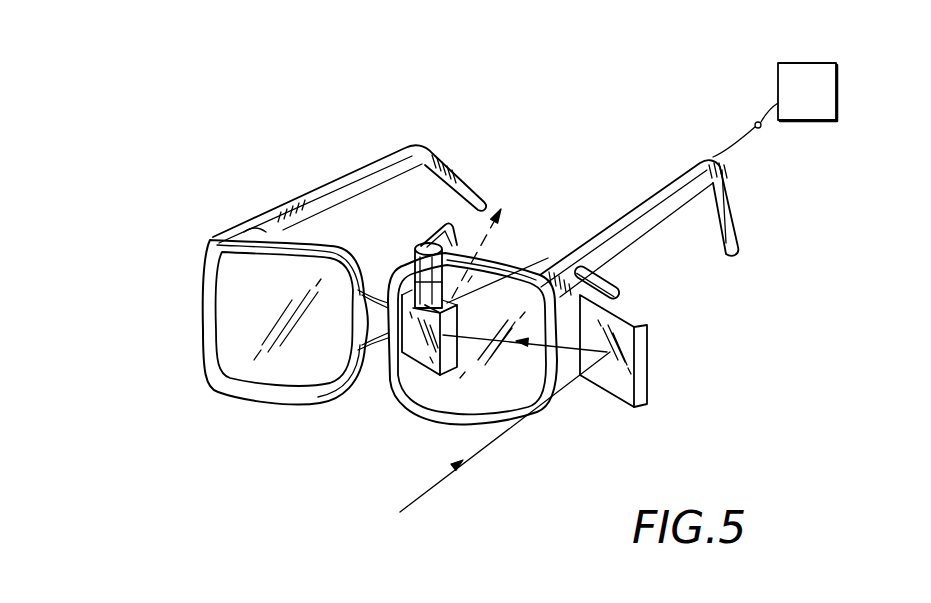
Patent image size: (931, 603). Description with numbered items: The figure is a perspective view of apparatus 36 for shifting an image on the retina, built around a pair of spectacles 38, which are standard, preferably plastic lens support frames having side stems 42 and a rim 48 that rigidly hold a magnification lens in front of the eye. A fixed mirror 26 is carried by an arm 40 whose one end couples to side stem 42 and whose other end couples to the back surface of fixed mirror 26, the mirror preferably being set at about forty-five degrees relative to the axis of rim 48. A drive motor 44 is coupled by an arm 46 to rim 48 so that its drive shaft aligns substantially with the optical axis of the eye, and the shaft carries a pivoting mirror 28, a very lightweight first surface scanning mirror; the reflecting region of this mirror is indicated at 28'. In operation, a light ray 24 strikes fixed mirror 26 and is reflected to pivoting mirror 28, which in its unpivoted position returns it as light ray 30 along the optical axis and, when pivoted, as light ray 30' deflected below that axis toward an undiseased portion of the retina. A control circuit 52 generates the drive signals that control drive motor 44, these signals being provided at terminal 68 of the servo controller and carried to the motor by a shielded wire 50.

The light ray 24 is at (440, 478).
The fixed mirror 26 is at (647, 380).
The pivoting mirror 28 is at (397, 377).
The half-silvered reflecting region 28' is at (492, 340).
The light ray 30 is at (494, 299).
The light ray 30' is at (499, 224).
The apparatus 36 is at (188, 234).
The spectacles 38 is at (283, 202).
The arm 40 is at (622, 296).
The side stem 42 is at (733, 218).
The drive motor 44 is at (411, 266).
The arm 46 is at (438, 230).
The rim 48 is at (217, 380).
The shielded wire 50 is at (715, 153).
The control circuit 52 is at (810, 121).
The terminal 68 is at (758, 122).